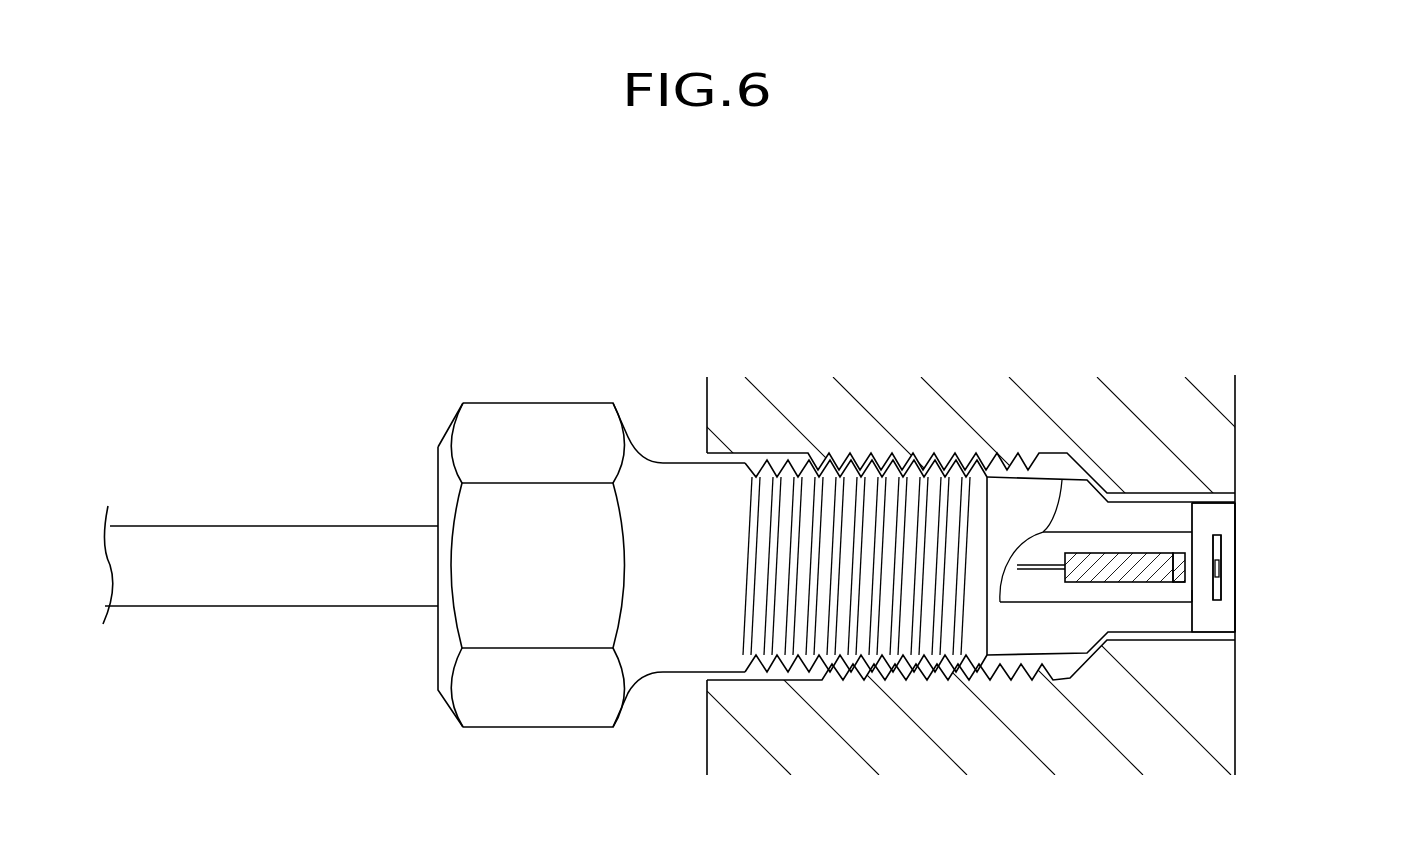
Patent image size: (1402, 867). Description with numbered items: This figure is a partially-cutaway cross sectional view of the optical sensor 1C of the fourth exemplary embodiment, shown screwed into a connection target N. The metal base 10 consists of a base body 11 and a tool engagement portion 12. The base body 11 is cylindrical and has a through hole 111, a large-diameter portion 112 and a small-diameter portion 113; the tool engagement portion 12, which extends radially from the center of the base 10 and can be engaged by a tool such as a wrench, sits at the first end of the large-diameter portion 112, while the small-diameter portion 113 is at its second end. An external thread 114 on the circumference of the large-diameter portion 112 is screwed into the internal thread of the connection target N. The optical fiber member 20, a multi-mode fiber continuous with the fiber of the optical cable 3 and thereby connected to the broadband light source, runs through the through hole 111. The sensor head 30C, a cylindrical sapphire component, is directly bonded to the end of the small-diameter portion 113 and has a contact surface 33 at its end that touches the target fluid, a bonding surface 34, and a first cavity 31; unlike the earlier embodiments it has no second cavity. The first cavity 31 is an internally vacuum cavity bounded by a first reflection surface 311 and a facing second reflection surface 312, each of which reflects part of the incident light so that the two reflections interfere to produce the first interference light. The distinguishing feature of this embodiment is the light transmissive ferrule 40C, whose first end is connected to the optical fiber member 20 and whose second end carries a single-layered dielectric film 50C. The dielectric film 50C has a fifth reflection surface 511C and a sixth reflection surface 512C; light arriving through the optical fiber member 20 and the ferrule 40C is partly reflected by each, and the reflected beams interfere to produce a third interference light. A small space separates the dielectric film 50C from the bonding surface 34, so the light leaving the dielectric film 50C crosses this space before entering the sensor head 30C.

The optical sensor 1C is at (1108, 193).
The optical cable 3 is at (283, 526).
The base 10 is at (922, 458).
The base body 11 is at (832, 456).
The tool engagement portion 12 is at (566, 403).
The optical fiber member 20 is at (1043, 572).
The sensor head 30C is at (1242, 505).
The first cavity 31 is at (1230, 586).
The first reflection surface 311 is at (1230, 583).
The second reflection surface 312 is at (1220, 598).
The contact surface 33 is at (1237, 553).
The bonding surface 34 is at (1180, 487).
The ferrule 40C is at (1077, 585).
The dielectric film 50C is at (1184, 545).
The fifth reflection surface 511C is at (1198, 600).
The sixth reflection surface 512C is at (1175, 583).
The through hole 111 is at (1060, 535).
The large-diameter portion 112 is at (1023, 458).
The small-diameter portion 113 is at (1130, 643).
The external thread 114 is at (880, 672).
The connection target N is at (1210, 427).